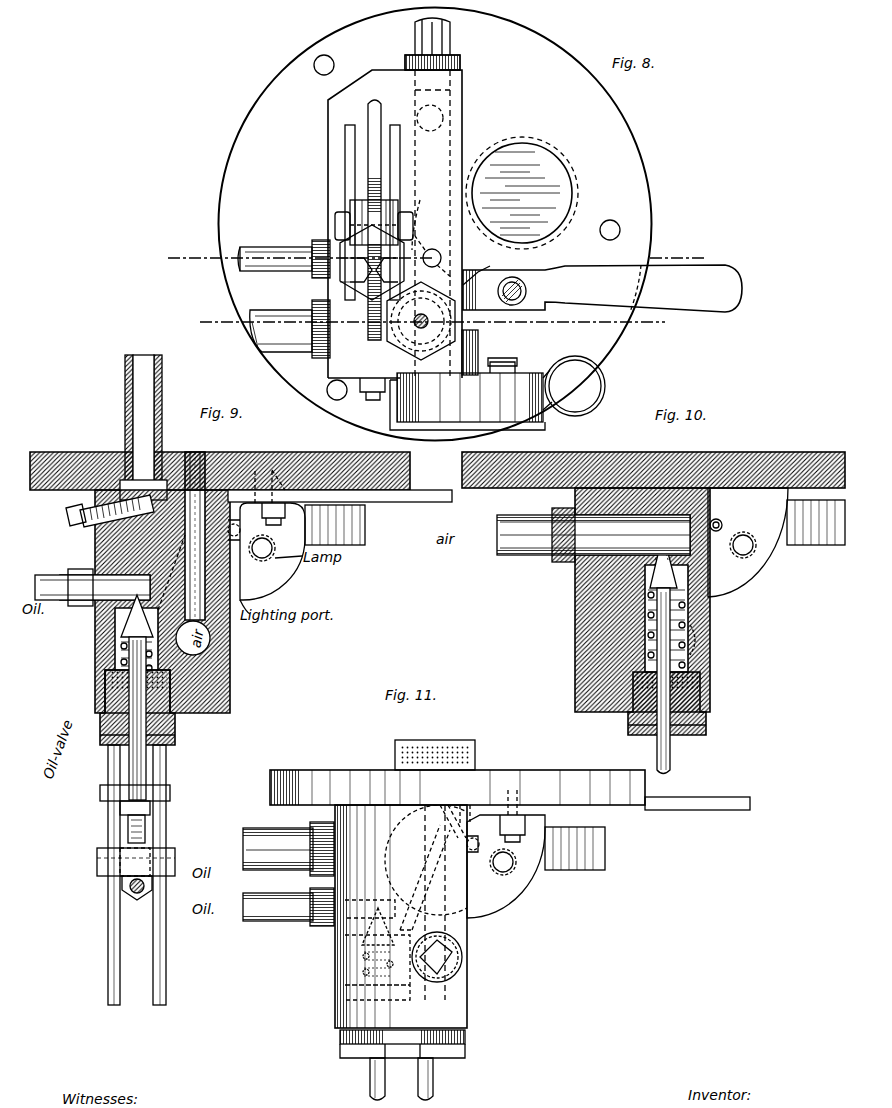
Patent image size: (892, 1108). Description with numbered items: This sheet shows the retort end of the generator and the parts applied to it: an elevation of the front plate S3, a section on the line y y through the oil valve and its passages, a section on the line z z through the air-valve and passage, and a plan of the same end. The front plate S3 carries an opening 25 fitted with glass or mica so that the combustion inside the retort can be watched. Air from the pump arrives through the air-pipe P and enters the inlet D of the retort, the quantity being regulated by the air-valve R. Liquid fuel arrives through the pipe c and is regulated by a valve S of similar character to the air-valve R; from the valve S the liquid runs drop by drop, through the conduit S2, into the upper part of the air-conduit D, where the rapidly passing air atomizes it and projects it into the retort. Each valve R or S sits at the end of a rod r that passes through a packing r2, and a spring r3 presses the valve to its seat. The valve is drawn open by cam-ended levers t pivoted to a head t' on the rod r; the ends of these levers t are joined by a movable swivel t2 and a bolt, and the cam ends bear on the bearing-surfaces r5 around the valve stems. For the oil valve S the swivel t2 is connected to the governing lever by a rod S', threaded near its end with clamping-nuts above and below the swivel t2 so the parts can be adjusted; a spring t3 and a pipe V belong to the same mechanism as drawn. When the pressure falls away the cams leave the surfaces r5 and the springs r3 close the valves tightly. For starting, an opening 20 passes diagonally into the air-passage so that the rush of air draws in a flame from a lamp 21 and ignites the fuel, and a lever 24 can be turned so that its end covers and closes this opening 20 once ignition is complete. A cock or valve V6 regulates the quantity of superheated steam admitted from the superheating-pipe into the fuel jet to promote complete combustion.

In FIG. 8, the rod S' is at (387, 216).
In FIG. 9, the rod S' is at (133, 897).
In FIG. 11, the rod S' is at (347, 933).
In FIG. 8, the passage E is at (430, 118).
In FIG. 11, the passage E is at (440, 860).
In FIG. 8, the front plate S3 is at (499, 120).
In FIG. 9, the front plate S3 is at (280, 452).
In FIG. 10, the front plate S3 is at (560, 452).
In FIG. 11, the front plate S3 is at (510, 775).
In FIG. 8, the opening 25 is at (522, 193).
In FIG. 8, the levers t is at (369, 212).
In FIG. 9, the levers t is at (131, 875).
In FIG. 8, the head t' is at (365, 284).
In FIG. 9, the head t' is at (125, 814).
In FIG. 8, the movable swivel t2 is at (352, 215).
In FIG. 9, the movable swivel t2 is at (150, 860).
In FIG. 10, the spring t3 is at (690, 650).
In FIG. 9, the valve S is at (145, 582).
In FIG. 8, the conduit S2 is at (424, 223).
In FIG. 9, the conduit S2 is at (150, 580).
In FIG. 11, the conduit S2 is at (397, 912).
In FIG. 8, the inlet D is at (433, 252).
In FIG. 9, the inlet D is at (195, 452).
In FIG. 8, the rod r is at (415, 318).
In FIG. 9, the rod r is at (146, 752).
In FIG. 10, the rod r is at (671, 681).
In FIG. 11, the rod r is at (398, 1079).
In FIG. 9, the packing r2 is at (100, 718).
In FIG. 10, the packing r2 is at (700, 710).
In FIG. 9, the spring r3 is at (121, 650).
In FIG. 11, the spring r3 is at (364, 968).
In FIG. 8, the bearing-surfaces r5 is at (340, 250).
In FIG. 9, the bearing-surfaces r5 is at (176, 740).
In FIG. 10, the bearing-surfaces r5 is at (632, 738).
In FIG. 11, the bearing-surfaces r5 is at (345, 1058).
In FIG. 8, the pipe c is at (284, 259).
In FIG. 9, the pipe c is at (92, 581).
In FIG. 11, the pipe c is at (288, 907).
In FIG. 8, the air-pipe P is at (290, 329).
In FIG. 10, the air-pipe P is at (593, 535).
In FIG. 11, the air-pipe P is at (288, 849).
In FIG. 8, the opening 20 is at (481, 269).
In FIG. 9, the opening 20 is at (266, 535).
In FIG. 11, the opening 20 is at (492, 861).
In FIG. 8, the lamp 21 is at (497, 383).
In FIG. 9, the lamp 21 is at (307, 533).
In FIG. 10, the lamp 21 is at (776, 542).
In FIG. 11, the lamp 21 is at (542, 860).
In FIG. 8, the lever 24 is at (602, 288).
In FIG. 9, the lever 24 is at (340, 495).
In FIG. 11, the lever 24 is at (499, 816).
In FIG. 8, the line y y is at (432, 253).
In FIG. 8, the line z z is at (430, 322).
In FIG. 9, the vent tube V is at (149, 427).
In FIG. 9, the cock or valve V6 is at (101, 511).
In FIG. 10, the air-valve R is at (672, 582).